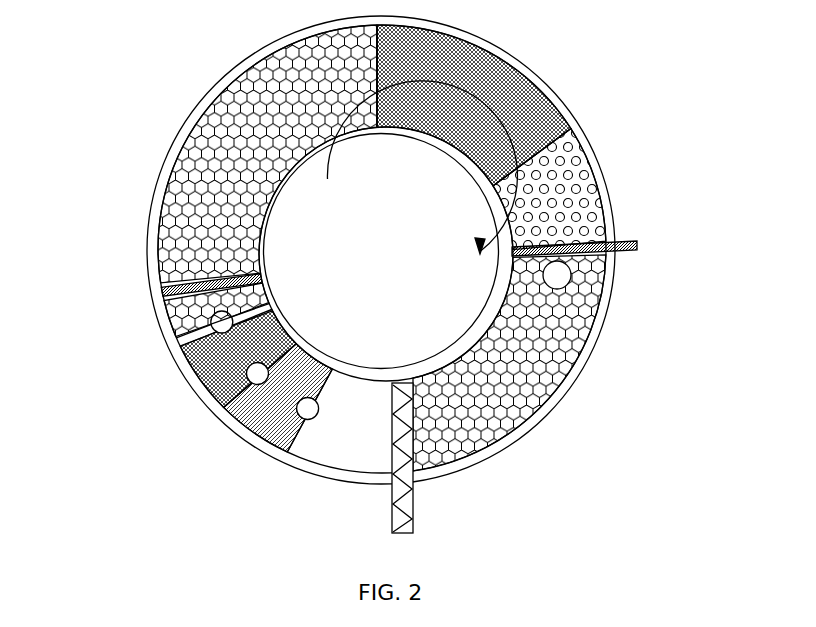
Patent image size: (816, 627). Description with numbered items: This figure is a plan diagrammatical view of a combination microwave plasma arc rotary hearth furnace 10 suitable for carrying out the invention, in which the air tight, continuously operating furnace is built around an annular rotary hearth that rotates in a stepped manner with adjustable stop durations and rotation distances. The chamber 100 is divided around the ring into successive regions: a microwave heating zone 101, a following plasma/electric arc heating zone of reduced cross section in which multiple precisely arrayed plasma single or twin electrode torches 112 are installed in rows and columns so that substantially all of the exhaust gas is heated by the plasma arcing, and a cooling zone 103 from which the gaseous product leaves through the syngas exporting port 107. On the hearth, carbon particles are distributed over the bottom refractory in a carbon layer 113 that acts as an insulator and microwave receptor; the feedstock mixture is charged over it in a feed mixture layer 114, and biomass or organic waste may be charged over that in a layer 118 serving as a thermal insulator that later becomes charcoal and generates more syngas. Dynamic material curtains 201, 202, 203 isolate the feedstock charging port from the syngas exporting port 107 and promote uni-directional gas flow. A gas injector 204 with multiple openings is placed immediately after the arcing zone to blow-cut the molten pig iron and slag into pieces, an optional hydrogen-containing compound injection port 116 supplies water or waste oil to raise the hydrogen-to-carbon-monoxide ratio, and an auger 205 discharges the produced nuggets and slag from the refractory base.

The furnace 10 is at (110, 204).
The chamber 100 is at (340, 456).
The microwave heating zone 101 is at (250, 96).
The cooling zone 103 is at (537, 383).
The gaseous product exporting port 107 is at (571, 279).
The plasma single or twin electrode torches 112 is at (580, 211).
The carbon layer 113 is at (250, 446).
The feed mixture layer 114 is at (205, 395).
The hydrogen-containing compound injection port 116 is at (165, 298).
The biomass or organic waste layer 118 is at (158, 265).
The dynamic material curtain 201 is at (310, 447).
The dynamic material curtain 202 is at (225, 415).
The dynamic material curtain 203 is at (180, 344).
The gas injector 204 is at (622, 243).
The auger 205 is at (415, 498).